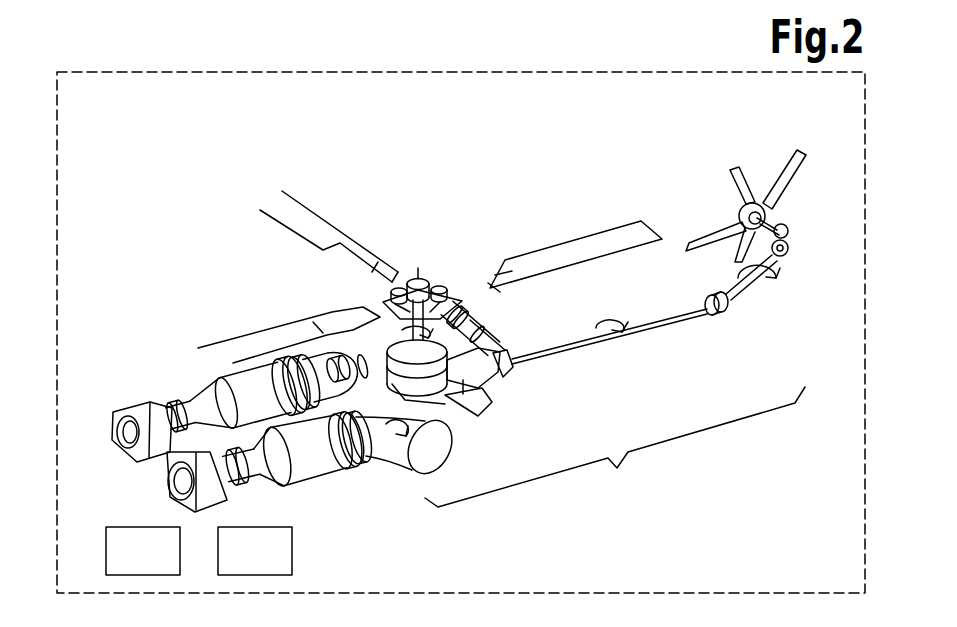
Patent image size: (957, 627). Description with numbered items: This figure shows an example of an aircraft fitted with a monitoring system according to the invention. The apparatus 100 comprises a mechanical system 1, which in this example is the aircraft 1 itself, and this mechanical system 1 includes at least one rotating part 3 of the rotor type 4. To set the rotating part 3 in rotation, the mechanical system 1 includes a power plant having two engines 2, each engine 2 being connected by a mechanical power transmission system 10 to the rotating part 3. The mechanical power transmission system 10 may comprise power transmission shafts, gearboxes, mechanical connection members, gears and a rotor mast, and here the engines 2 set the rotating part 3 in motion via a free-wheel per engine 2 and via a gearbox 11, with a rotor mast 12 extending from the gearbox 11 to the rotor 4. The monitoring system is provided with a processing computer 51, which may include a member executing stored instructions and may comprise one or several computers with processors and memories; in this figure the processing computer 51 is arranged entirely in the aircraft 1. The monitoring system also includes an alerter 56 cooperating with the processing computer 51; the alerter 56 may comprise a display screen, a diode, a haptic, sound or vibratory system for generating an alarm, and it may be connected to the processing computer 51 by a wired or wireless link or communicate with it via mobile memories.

The mechanical system 1 is at (160, 72).
The apparatus 100 is at (360, 72).
The engine 2 is at (247, 384).
The rotating part 3 is at (293, 213).
The rotor 4 is at (418, 280).
The mechanical power transmission system 10 is at (615, 447).
The gearbox 11 is at (476, 405).
The rotor mast 12 is at (382, 322).
The processing computer 51 is at (237, 567).
The alerter 56 is at (125, 567).